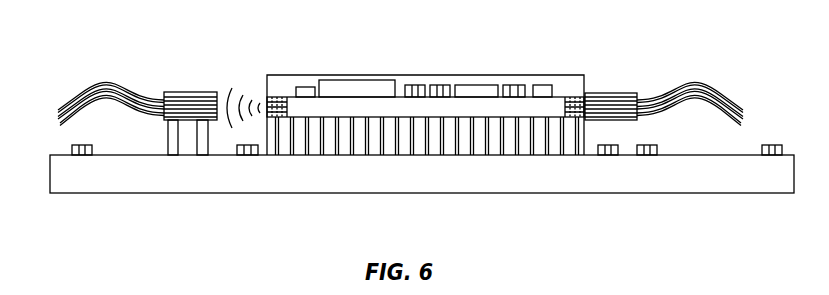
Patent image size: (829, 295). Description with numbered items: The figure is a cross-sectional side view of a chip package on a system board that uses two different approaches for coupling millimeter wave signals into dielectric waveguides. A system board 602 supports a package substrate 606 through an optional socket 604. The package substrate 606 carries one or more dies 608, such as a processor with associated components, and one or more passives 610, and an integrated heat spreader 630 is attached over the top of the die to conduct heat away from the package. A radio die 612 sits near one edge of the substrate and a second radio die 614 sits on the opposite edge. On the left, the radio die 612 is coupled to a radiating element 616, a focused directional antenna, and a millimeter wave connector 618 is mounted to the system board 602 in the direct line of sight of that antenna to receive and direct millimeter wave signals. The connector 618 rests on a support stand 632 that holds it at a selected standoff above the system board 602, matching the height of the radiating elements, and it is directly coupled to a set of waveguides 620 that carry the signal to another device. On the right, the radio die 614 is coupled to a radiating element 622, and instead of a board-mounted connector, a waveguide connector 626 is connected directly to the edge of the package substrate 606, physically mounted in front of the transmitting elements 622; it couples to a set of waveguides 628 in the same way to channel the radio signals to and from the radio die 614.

The system board 602 is at (190, 186).
The socket 604 is at (442, 148).
The package substrate 606 is at (467, 107).
The dies 608 is at (357, 80).
The passives 610 is at (412, 85).
The radio die 612 is at (305, 87).
The second radio die 614 is at (545, 85).
The radiating element 616 is at (267, 100).
The millimeter wave connector 618 is at (183, 92).
The waveguides 620 is at (83, 88).
The radiating element 622 is at (578, 97).
The waveguide connector 626 is at (610, 93).
The waveguides 628 is at (722, 95).
The integrated heat spreader 630 is at (515, 75).
The support stand 632 is at (167, 133).